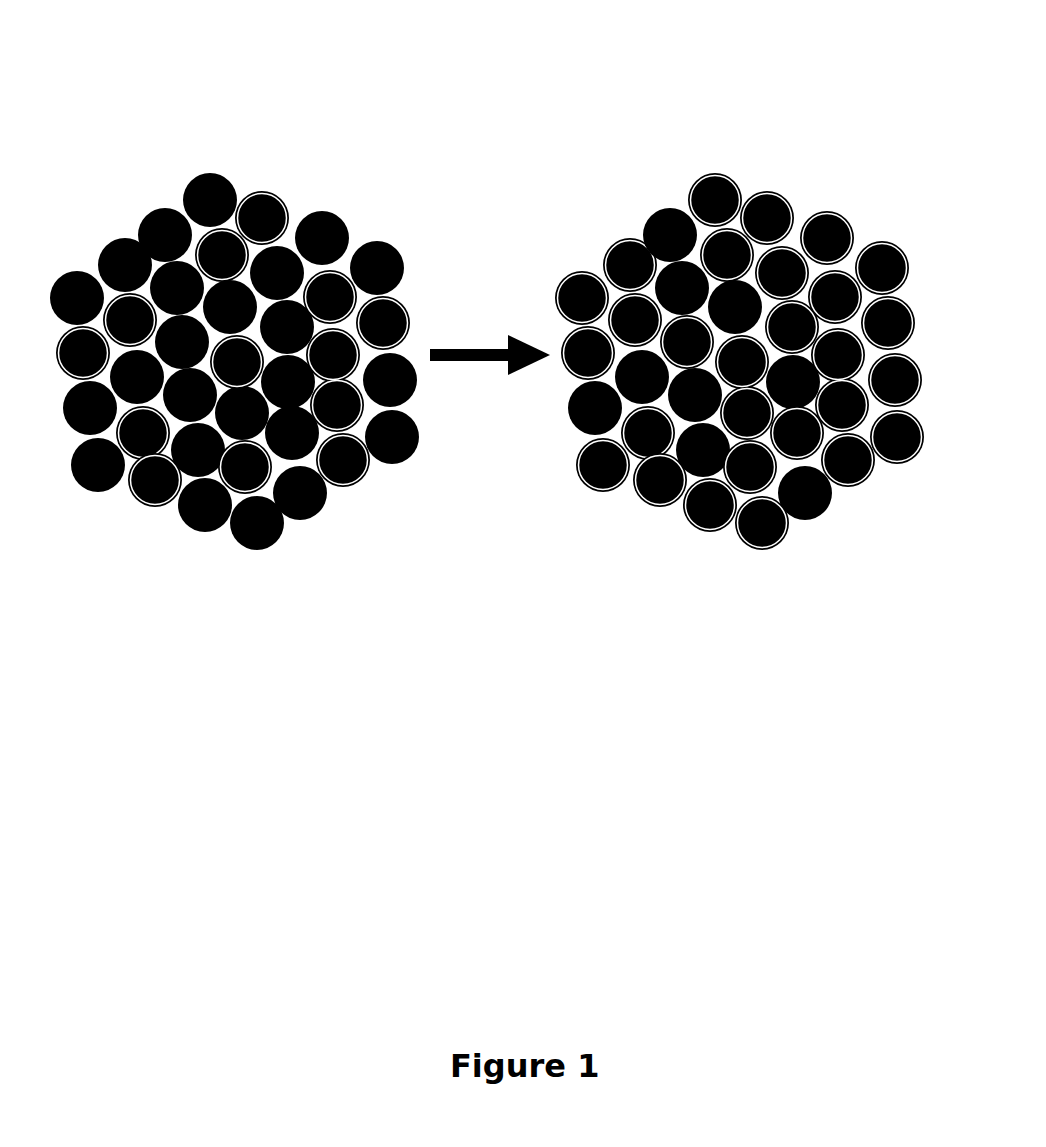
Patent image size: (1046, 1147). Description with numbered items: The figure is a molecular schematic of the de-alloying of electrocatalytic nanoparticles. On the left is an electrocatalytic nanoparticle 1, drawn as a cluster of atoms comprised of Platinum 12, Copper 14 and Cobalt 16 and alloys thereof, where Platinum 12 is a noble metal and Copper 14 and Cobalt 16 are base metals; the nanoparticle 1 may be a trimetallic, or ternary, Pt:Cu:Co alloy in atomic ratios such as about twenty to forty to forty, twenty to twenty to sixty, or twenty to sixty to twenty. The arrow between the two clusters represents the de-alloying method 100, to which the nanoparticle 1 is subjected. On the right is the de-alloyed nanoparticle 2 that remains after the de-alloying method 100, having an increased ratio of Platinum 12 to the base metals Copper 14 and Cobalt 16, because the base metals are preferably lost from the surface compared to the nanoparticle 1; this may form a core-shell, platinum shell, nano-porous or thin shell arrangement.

The electrocatalytic nanoparticle 1 is at (253, 150).
The de-alloyed nanoparticle 2 is at (858, 183).
The platinum 12 is at (142, 490).
The copper 14 is at (328, 450).
The cobalt 16 is at (135, 205).
The de-alloying method 100 is at (477, 345).